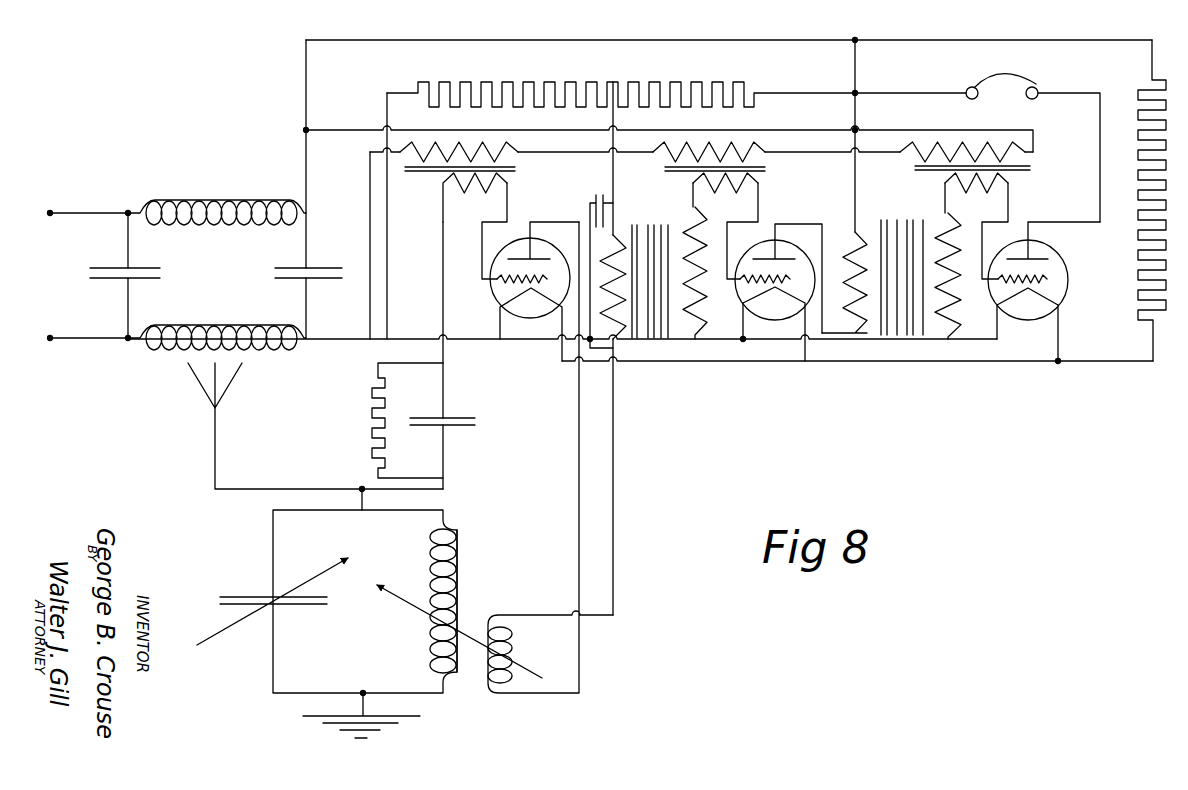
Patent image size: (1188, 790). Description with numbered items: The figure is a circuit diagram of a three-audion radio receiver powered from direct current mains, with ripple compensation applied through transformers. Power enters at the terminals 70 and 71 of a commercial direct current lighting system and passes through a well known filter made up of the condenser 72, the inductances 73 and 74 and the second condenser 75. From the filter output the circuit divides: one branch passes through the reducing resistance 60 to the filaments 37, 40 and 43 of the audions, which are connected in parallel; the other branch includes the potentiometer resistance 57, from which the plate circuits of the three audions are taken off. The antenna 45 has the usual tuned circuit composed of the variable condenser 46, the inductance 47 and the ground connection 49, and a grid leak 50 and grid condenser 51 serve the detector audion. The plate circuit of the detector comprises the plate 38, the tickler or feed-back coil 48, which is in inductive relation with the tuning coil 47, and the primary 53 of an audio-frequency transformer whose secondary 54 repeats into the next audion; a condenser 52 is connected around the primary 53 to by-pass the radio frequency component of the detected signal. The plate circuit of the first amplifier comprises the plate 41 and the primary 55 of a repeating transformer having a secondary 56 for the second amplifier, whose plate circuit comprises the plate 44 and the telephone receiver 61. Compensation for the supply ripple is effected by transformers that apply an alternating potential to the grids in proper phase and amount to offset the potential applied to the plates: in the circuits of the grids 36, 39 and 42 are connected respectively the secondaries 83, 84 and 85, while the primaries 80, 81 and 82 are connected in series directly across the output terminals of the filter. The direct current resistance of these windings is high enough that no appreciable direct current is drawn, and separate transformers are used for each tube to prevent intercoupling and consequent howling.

The grid 36 is at (494, 284).
The audion filament 37 is at (539, 302).
The plate 38 is at (533, 257).
The grid 39 is at (738, 278).
The audion filament 40 is at (783, 300).
The plate 41 is at (779, 257).
The grid 42 is at (990, 277).
The audion filament 43 is at (1039, 303).
The plate 44 is at (1034, 257).
The antenna 45 is at (206, 392).
The variable condenser 46 is at (252, 590).
The tuning coil 47 is at (500, 582).
The feed-back coil 48 is at (556, 648).
The ground connection 49 is at (376, 676).
The grid leak 50 is at (370, 422).
The grid condenser 51 is at (483, 406).
The condenser 52 is at (596, 196).
The primary 53 is at (614, 236).
The secondary 54 is at (704, 286).
The primary 55 is at (853, 232).
The secondary 56 is at (943, 223).
The potentiometer resistance 57 is at (594, 80).
The reducing resistance 60 is at (1139, 273).
The telephone receiver 61 is at (993, 85).
The terminal 70 is at (62, 205).
The terminal 71 is at (62, 330).
The condenser 72 is at (87, 268).
The inductance 73 is at (236, 199).
The inductance 74 is at (236, 324).
The second condenser 75 is at (315, 265).
The primary 80 is at (516, 145).
The primary 81 is at (764, 145).
The primary 82 is at (1034, 147).
The secondary 83 is at (509, 178).
The secondary 84 is at (761, 178).
The secondary 85 is at (1013, 180).